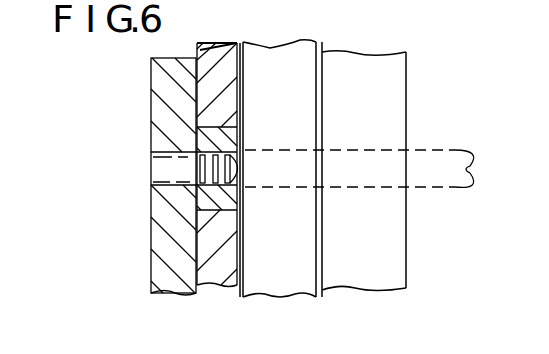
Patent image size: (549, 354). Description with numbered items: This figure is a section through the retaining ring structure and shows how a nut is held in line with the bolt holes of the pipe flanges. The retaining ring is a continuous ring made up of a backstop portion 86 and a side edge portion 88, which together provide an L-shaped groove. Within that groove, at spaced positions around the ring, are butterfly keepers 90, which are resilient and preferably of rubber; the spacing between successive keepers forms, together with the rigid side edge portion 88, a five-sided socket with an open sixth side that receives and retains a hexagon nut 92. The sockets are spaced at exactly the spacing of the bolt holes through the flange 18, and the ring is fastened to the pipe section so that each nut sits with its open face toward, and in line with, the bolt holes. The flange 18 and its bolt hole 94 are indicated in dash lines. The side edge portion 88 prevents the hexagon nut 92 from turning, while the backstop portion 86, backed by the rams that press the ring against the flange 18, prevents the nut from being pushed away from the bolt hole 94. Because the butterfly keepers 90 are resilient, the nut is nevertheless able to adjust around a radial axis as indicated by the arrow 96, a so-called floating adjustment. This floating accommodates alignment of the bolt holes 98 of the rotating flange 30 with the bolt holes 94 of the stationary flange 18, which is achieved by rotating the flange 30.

The flange 18 is at (288, 245).
The rotating flange 30 is at (376, 245).
The backstop portion 86 is at (160, 110).
The side edge portion 88 is at (222, 50).
The butterfly keepers 90 is at (203, 70).
The hexagon nut 92 is at (197, 137).
The bolt hole 94 is at (279, 147).
The arrow 96 is at (235, 168).
The bolt holes 98 is at (359, 147).